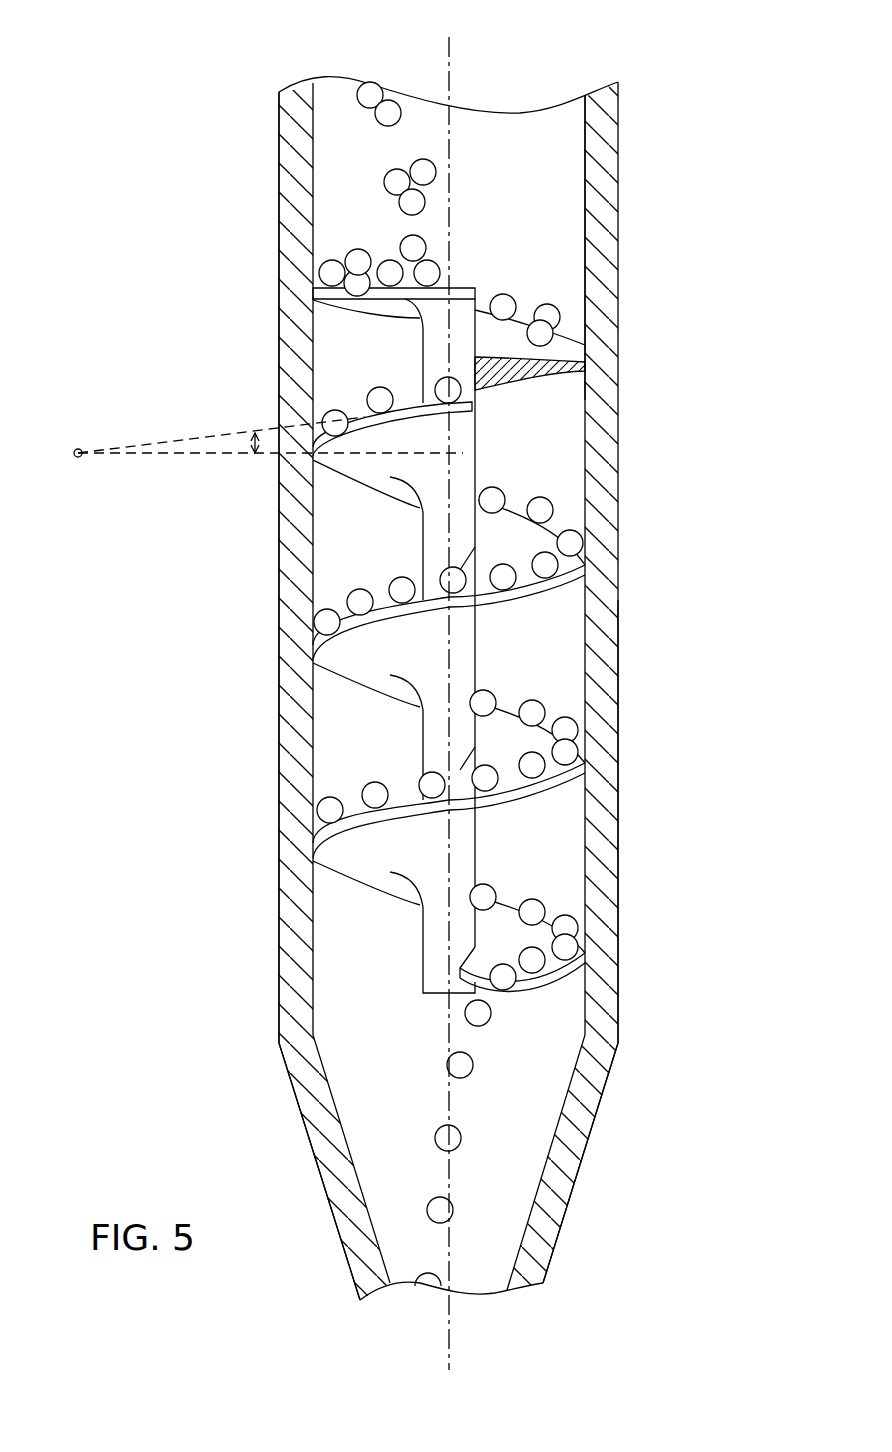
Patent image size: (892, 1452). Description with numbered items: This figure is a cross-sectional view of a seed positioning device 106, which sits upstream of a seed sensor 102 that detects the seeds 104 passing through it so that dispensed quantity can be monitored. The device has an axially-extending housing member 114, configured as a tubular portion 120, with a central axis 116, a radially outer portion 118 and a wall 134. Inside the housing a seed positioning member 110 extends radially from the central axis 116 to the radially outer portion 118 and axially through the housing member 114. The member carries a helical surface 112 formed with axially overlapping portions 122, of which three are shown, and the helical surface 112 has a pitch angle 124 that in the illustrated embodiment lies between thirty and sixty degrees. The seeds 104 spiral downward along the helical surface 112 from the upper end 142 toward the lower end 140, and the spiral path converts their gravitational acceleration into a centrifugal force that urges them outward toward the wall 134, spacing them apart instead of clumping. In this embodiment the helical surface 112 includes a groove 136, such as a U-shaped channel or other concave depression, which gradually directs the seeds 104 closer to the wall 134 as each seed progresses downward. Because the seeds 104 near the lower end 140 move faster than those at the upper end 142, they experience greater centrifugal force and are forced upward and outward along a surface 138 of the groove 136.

The seed sensor 102 is at (557, 1180).
The seeds 104 is at (420, 240).
The seed positioning device 106 is at (647, 463).
The seed positioning member 110 is at (385, 632).
The helical surface 112 is at (505, 542).
The housing member 114 is at (620, 587).
The central axis 116 is at (447, 65).
The radially outer portion 118 is at (578, 458).
The tubular portion 120 is at (618, 897).
The axially overlapping portions 122 is at (553, 290).
The pitch angle 124 is at (252, 443).
The wall 134 is at (610, 288).
The groove 136 is at (547, 373).
The surface of the groove 138 is at (543, 720).
The lower end 140 is at (637, 797).
The upper end 142 is at (267, 323).